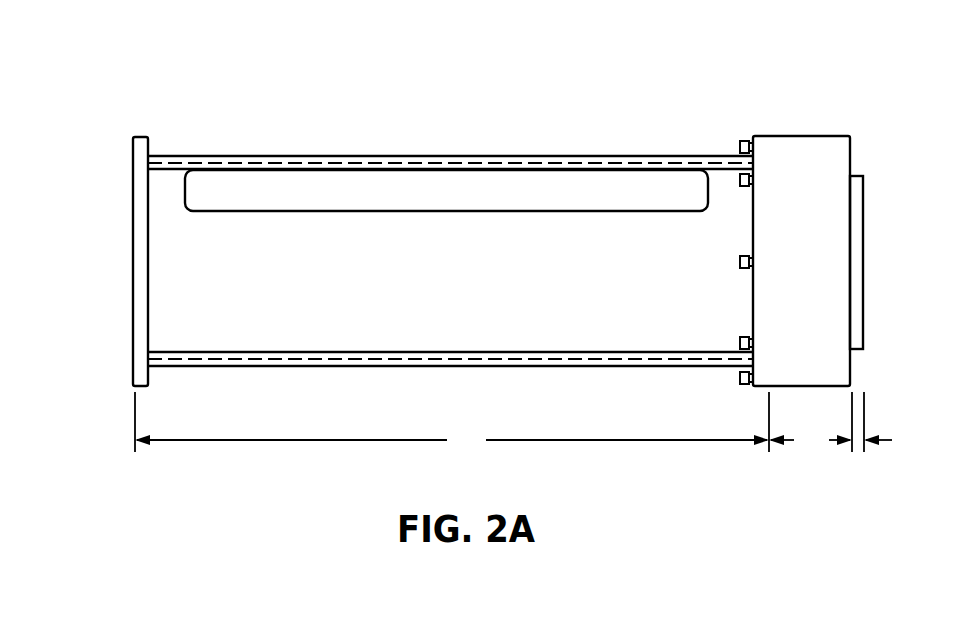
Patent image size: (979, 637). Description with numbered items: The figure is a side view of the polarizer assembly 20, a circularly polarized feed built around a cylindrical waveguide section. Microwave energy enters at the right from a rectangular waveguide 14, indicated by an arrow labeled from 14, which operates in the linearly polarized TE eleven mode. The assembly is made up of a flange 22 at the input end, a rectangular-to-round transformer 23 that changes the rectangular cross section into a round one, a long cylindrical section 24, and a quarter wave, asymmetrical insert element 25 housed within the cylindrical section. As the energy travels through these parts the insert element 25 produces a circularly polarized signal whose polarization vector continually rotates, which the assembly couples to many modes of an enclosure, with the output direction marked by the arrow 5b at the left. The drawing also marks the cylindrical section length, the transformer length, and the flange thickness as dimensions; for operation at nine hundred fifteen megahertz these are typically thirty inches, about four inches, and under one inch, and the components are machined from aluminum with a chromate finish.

The polarizer assembly 20 is at (507, 239).
The flange 22 is at (865, 329).
The rectangular-to-round transformer 23 is at (820, 152).
The cylindrical section 24 is at (190, 253).
The quarter wave, asymmetrical insert element 25 is at (442, 182).
The direction toward section 5b is at (122, 264).
The rectangular waveguide 14 is at (876, 263).